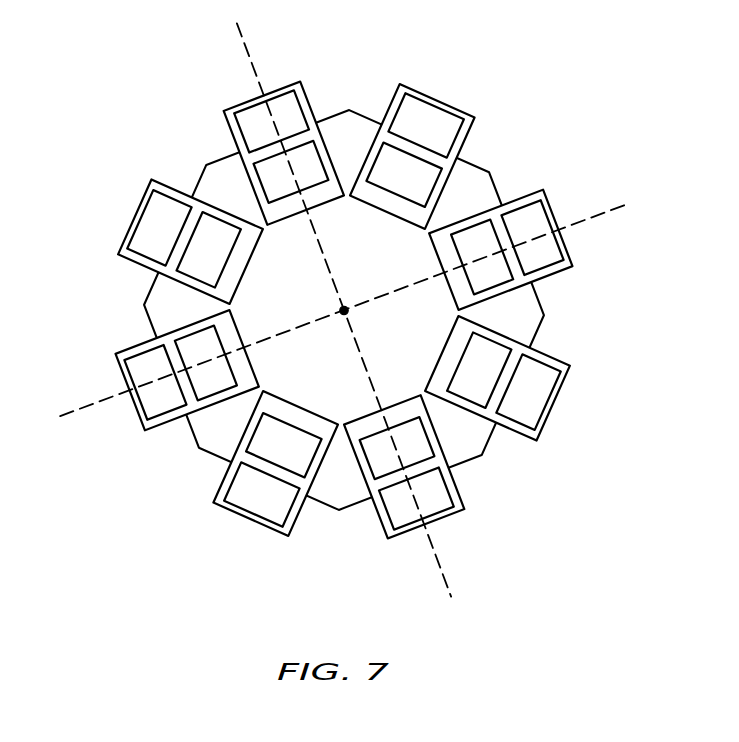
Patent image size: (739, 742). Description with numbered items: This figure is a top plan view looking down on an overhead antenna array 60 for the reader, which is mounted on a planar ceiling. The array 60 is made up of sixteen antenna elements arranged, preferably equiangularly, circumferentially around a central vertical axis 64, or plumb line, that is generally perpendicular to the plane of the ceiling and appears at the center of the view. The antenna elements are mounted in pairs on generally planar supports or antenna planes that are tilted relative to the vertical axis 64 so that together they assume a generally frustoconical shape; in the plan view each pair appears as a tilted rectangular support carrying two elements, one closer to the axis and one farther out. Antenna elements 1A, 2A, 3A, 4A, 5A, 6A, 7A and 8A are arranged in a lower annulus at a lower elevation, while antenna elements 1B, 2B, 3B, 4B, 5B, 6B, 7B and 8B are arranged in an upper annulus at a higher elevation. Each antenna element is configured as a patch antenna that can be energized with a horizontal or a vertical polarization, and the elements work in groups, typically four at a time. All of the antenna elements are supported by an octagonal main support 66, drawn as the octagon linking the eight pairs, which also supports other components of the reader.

The overhead antenna array 60 is at (344, 304).
The central vertical axis 64 is at (345, 305).
The octagonal main support 66 is at (212, 435).
The antenna element 1A is at (185, 347).
The antenna element 1B is at (143, 380).
The antenna element 2A is at (483, 233).
The antenna element 2B is at (545, 255).
The antenna element 3A is at (265, 175).
The antenna element 3B is at (250, 120).
The antenna element 4A is at (418, 448).
The antenna element 4B is at (435, 502).
The antenna element 5A is at (198, 272).
The antenna element 5B is at (150, 232).
The antenna element 6A is at (498, 352).
The antenna element 6B is at (538, 395).
The antenna element 7A is at (387, 152).
The antenna element 7B is at (430, 118).
The antenna element 8A is at (300, 467).
The antenna element 8B is at (262, 508).